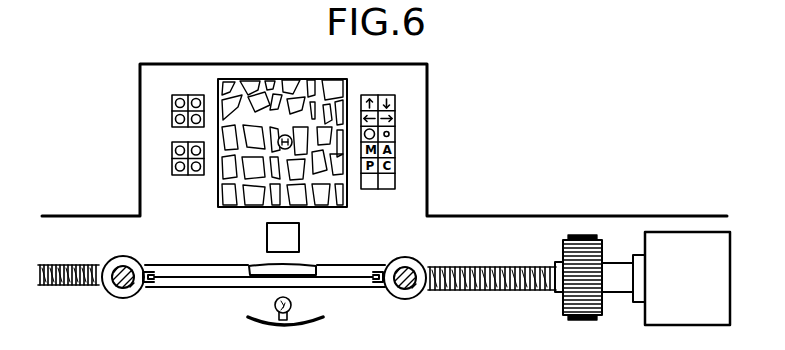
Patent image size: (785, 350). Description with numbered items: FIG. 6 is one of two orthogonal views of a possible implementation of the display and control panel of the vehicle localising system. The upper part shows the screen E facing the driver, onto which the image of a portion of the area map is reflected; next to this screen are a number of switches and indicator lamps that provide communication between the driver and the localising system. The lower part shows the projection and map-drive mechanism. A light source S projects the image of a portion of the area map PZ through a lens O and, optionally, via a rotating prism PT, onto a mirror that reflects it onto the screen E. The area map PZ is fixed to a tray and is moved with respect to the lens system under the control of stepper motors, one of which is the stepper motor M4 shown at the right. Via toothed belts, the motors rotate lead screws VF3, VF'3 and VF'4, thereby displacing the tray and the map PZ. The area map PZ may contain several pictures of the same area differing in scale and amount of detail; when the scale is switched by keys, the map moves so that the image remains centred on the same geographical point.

The screen E is at (220, 82).
The area map PZ is at (185, 278).
The rotating prism PT is at (270, 236).
The lens O is at (300, 270).
The light source S is at (290, 300).
The lead screw VF3 is at (125, 292).
The lead screw VF'4 is at (68, 299).
The lead screw VF'3 is at (422, 297).
The stepper motor M4 is at (680, 253).